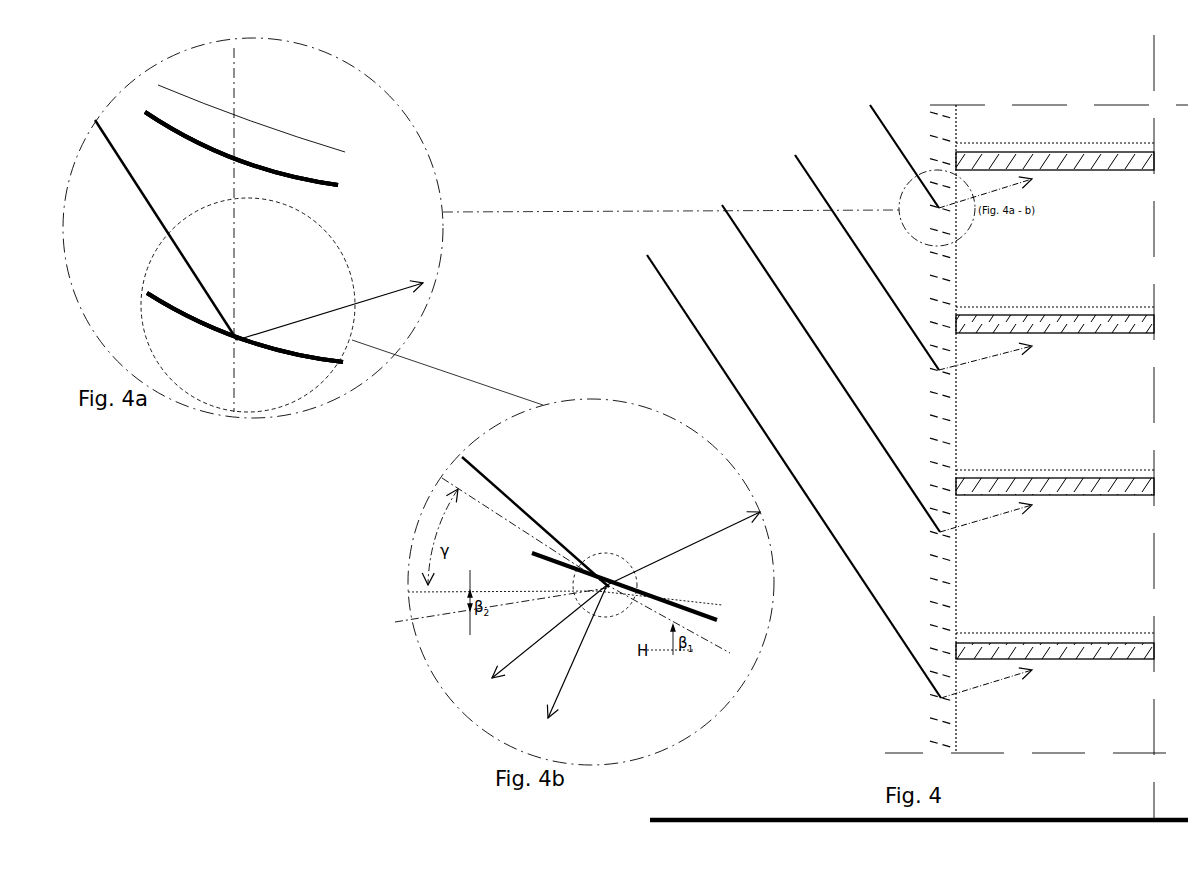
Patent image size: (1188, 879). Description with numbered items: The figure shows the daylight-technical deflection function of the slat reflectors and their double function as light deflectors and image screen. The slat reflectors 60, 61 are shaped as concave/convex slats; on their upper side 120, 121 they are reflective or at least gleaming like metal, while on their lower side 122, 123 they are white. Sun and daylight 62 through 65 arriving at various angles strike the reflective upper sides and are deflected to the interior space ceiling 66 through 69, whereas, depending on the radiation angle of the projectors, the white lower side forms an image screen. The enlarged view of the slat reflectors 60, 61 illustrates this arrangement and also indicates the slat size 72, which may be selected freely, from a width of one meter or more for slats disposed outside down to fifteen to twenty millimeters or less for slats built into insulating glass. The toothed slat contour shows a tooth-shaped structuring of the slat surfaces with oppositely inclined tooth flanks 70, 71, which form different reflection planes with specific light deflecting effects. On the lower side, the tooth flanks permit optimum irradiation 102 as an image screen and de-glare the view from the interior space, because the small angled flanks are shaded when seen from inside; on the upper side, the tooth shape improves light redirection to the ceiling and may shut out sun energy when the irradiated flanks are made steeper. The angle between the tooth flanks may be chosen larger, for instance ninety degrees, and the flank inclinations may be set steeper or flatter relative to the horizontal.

In FIG. 4A, the slat reflector 60 is at (338, 185).
In FIG. 4A, the slat reflector 61 is at (343, 362).
In FIG. 4, the sun and daylight 62 is at (664, 280).
In FIG. 4, the sun and daylight 63 is at (738, 229).
In FIG. 4, the sun and daylight 64 is at (812, 180).
In FIG. 4, the sun and daylight 65 is at (886, 130).
In FIG. 4, the interior space ceiling 66 is at (1087, 660).
In FIG. 4, the interior space ceiling 67 is at (1085, 496).
In FIG. 4, the interior space ceiling 68 is at (1087, 334).
In FIG. 4, the interior space ceiling 69 is at (1087, 171).
In FIG. 4B, the tooth flank 70 is at (719, 648).
In FIG. 4B, the tooth flank 71 is at (722, 605).
In FIG. 4A, the slat size 72 is at (253, 116).
In FIG. 4B, the irradiation 102 is at (542, 648).
In FIG. 4A, the upper side of slat reflector 120 is at (282, 175).
In FIG. 4A, the upper side of slat reflector 121 is at (291, 355).
In FIG. 4A, the lower side of slat reflector 122 is at (277, 180).
In FIG. 4A, the lower side of slat reflector 123 is at (277, 358).